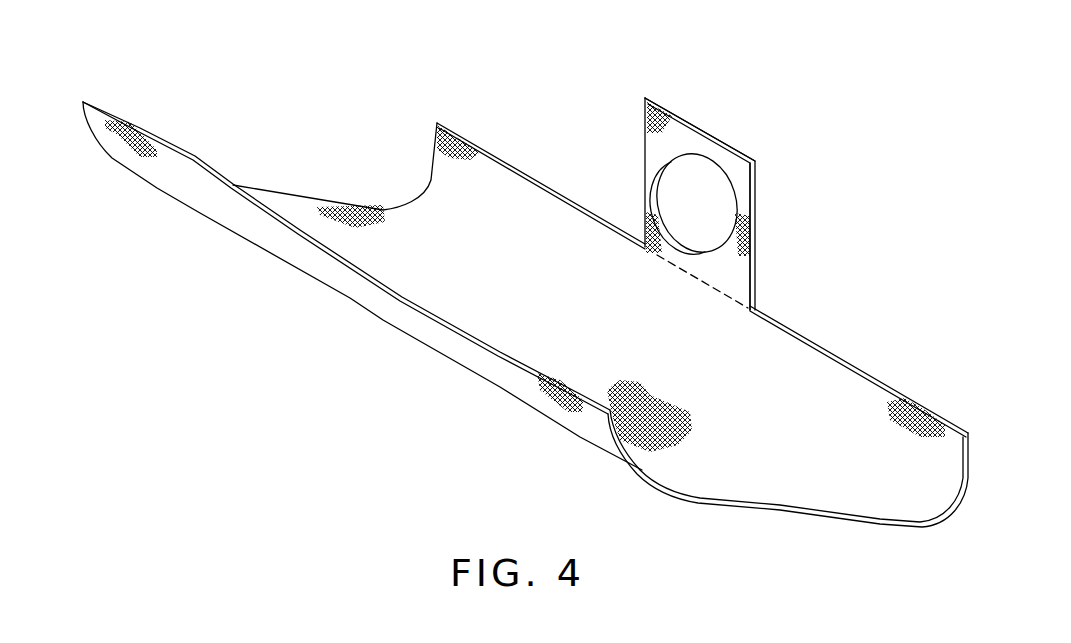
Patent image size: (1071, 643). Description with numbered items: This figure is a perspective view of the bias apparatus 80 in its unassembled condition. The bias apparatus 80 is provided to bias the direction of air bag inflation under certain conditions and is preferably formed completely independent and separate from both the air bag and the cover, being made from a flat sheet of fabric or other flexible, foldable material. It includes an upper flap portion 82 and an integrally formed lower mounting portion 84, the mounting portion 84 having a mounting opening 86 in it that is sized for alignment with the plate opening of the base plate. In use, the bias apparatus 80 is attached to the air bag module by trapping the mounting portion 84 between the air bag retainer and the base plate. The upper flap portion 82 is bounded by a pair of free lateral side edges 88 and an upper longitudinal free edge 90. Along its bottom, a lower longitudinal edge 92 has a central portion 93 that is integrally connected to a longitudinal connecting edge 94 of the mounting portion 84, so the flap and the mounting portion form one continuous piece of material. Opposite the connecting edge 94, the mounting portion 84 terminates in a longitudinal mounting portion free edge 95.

The bias apparatus 80 is at (277, 195).
The upper flap portion 82 is at (200, 208).
The lower mounting portion 84 is at (712, 143).
The mounting opening 86 is at (718, 183).
The free lateral side edges 88 is at (313, 198).
The upper longitudinal free edge 90 is at (402, 297).
The lower longitudinal edge 92 is at (813, 338).
The central portion 93 is at (733, 298).
The longitudinal connecting edge 94 is at (703, 282).
The mounting portion free edge 95 is at (688, 118).